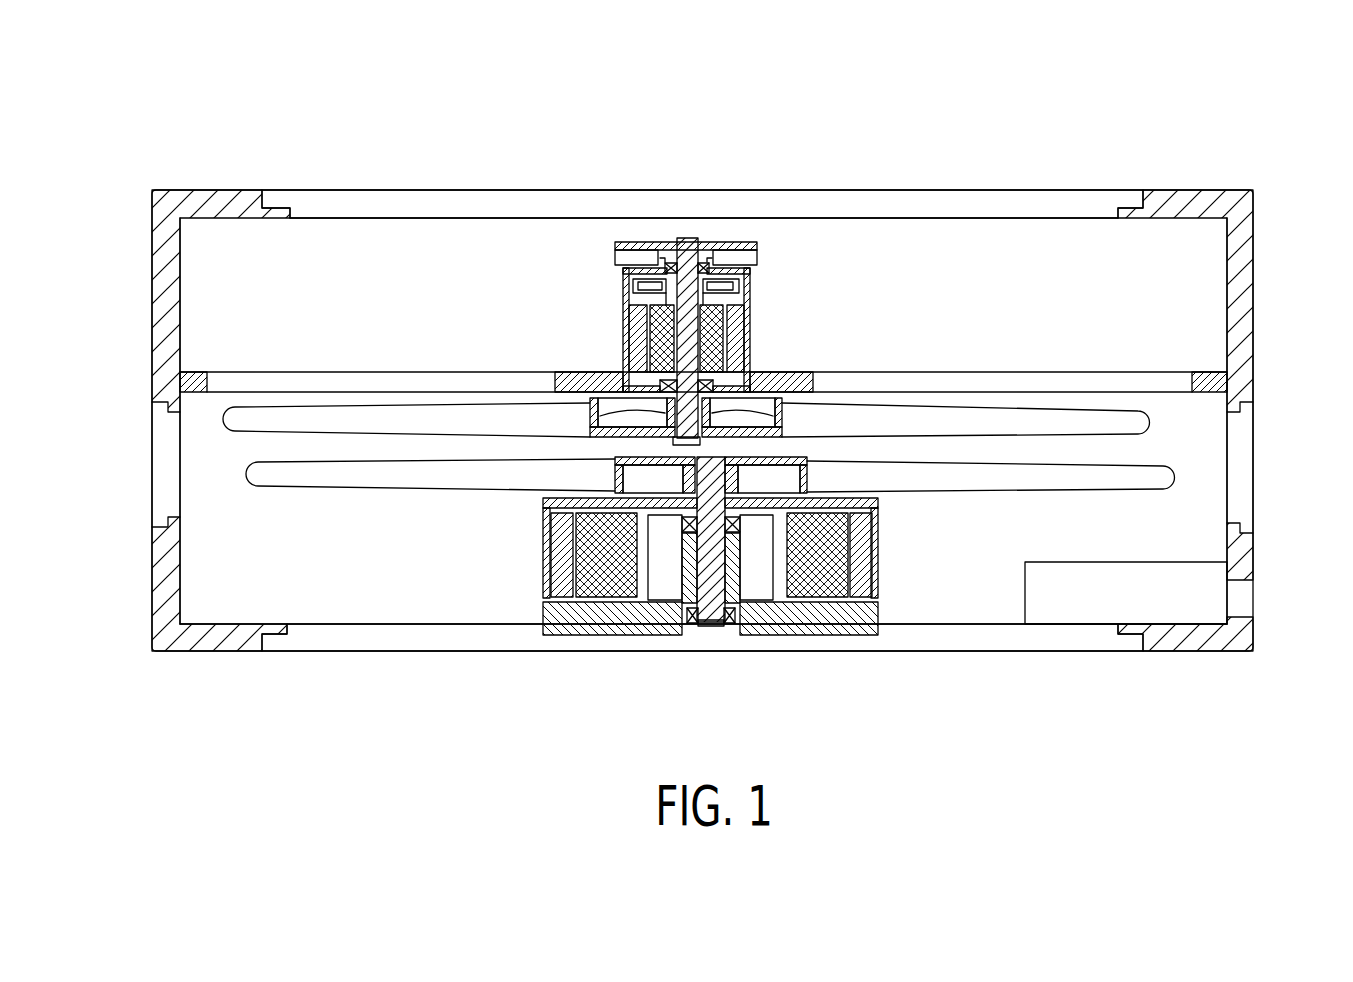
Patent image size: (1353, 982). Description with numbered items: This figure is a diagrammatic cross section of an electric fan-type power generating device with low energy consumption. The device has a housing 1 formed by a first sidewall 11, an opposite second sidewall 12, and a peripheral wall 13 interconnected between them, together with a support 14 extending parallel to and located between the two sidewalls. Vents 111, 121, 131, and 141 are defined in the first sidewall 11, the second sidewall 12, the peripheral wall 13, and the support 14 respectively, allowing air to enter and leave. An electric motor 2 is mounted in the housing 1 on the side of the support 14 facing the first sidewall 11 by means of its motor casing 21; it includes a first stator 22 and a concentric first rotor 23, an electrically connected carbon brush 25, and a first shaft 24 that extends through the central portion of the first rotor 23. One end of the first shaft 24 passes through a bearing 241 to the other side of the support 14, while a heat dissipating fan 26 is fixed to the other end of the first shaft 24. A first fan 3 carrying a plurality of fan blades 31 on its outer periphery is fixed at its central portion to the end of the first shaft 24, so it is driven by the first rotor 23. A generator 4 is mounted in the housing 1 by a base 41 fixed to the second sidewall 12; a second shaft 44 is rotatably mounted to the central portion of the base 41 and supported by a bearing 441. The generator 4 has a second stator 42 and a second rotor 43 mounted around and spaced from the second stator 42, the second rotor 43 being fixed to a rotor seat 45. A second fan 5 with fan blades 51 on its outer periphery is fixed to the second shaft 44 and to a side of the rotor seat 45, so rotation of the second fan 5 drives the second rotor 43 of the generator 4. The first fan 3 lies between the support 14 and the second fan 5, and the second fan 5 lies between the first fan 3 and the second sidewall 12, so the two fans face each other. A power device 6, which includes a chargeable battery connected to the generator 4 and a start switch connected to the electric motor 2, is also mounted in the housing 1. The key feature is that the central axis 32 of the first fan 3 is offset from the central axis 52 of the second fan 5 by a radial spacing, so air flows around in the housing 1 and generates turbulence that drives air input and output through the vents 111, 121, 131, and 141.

The housing 1 is at (1223, 186).
The first sidewall 11 is at (935, 208).
The vent 111 is at (485, 208).
The second sidewall 12 is at (650, 636).
The vent 121 is at (418, 640).
The peripheral wall 13 is at (1256, 282).
The vent 131 is at (162, 462).
The support 14 is at (555, 378).
The vent 141 is at (1072, 387).
The electric motor 2 is at (681, 264).
The motor casing 21 is at (623, 318).
The first stator 22 is at (738, 325).
The first rotor 23 is at (650, 352).
The first shaft 24 is at (688, 254).
The bearing 241 is at (730, 366).
The carbon brush 25 is at (733, 287).
The heat dissipating fan 26 is at (735, 242).
The first fan 3 is at (686, 366).
The fan blades 31 is at (980, 410).
The central axis 32 is at (590, 418).
The generator 4 is at (703, 600).
The base 41 is at (808, 636).
The second stator 42 is at (592, 592).
The second rotor 43 is at (565, 560).
The second shaft 44 is at (709, 632).
The bearing 441 is at (732, 628).
The rotor seat 45 is at (548, 534).
The second fan 5 is at (710, 492).
The fan blades 51 is at (1008, 486).
The central axis 52 is at (782, 418).
The power device 6 is at (1075, 608).